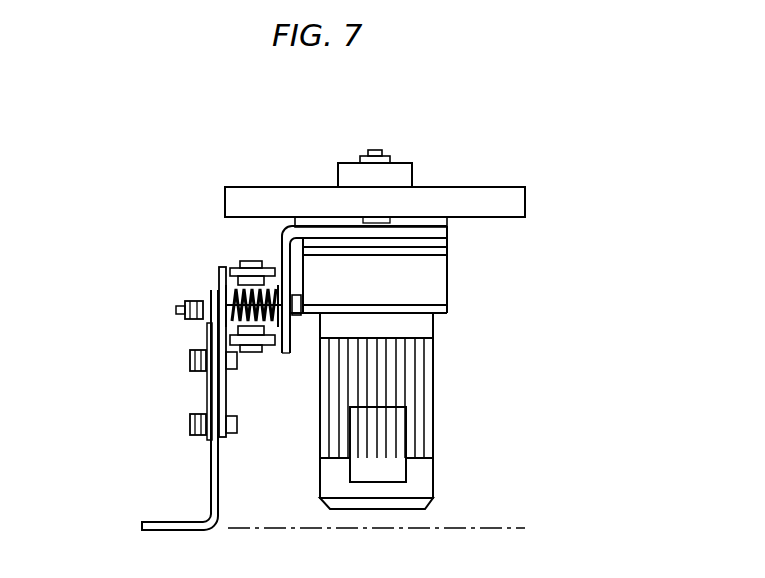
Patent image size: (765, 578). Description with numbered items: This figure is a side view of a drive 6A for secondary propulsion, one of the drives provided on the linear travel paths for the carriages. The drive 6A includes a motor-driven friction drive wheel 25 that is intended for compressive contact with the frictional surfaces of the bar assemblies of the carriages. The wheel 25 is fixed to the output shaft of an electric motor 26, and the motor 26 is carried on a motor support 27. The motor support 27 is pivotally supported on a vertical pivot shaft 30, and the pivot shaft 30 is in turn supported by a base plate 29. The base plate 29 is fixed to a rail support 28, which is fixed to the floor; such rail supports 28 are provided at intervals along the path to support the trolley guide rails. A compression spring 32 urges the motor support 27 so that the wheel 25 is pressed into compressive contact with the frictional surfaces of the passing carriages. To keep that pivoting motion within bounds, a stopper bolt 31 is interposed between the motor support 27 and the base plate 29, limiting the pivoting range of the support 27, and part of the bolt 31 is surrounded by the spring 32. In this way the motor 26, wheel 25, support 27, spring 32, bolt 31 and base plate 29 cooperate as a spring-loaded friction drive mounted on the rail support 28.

The drive for secondary propulsion 6A is at (540, 201).
The friction drive wheel 25 is at (455, 198).
The electric motor 26 is at (418, 396).
The motor support 27 is at (295, 224).
The rail support 28 is at (208, 484).
The base plate 29 is at (221, 398).
The vertical pivot shaft 30 is at (246, 262).
The stopper bolt 31 is at (182, 310).
The compression spring 32 is at (253, 320).